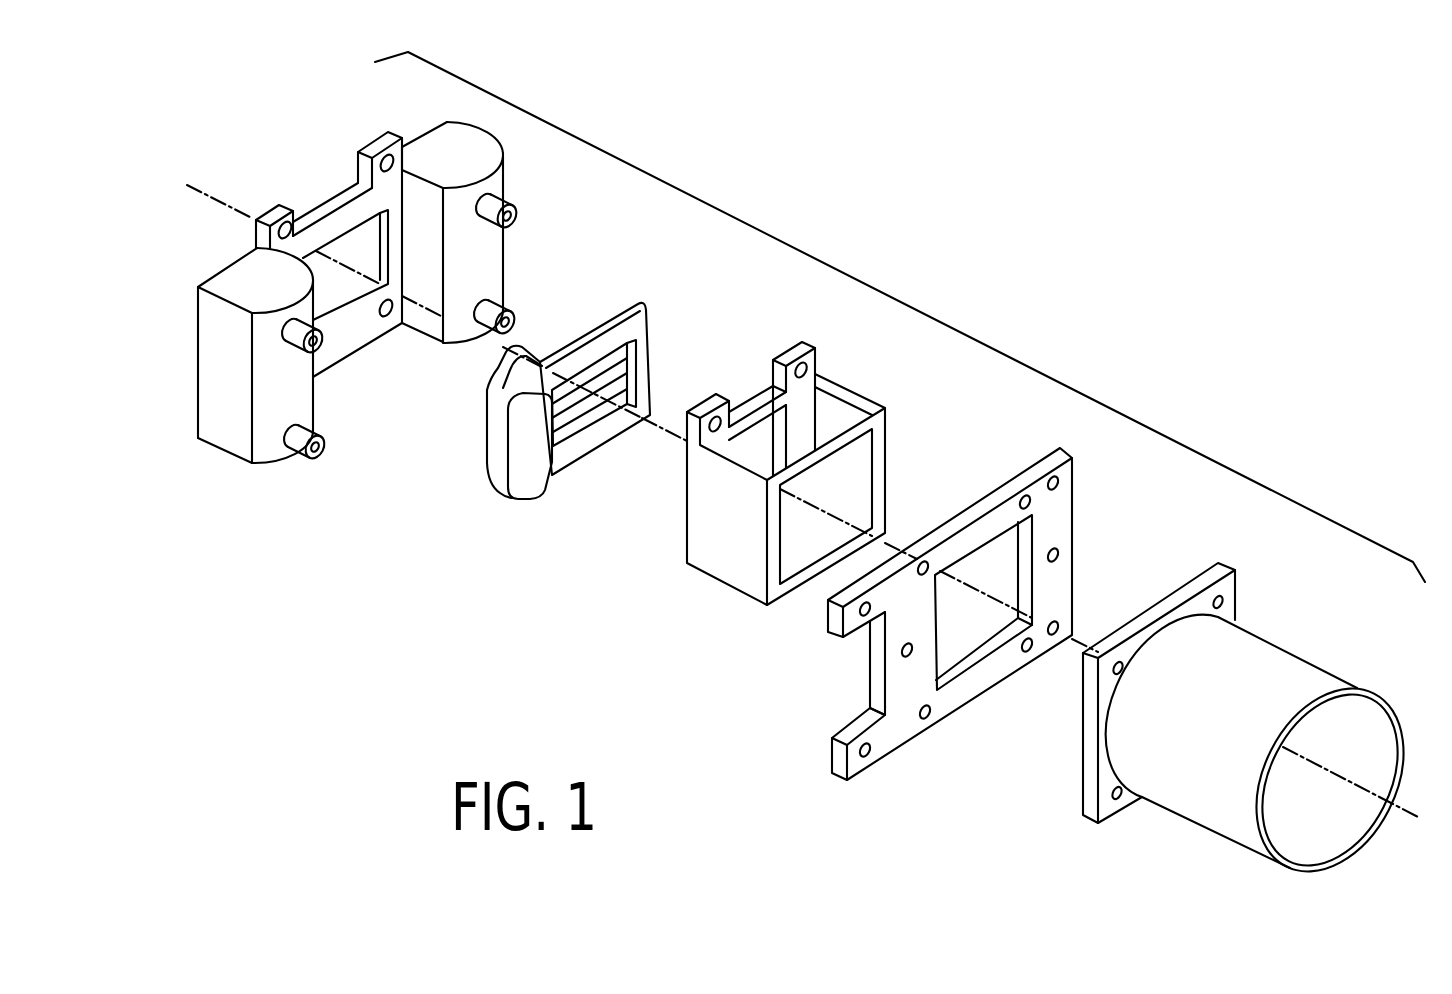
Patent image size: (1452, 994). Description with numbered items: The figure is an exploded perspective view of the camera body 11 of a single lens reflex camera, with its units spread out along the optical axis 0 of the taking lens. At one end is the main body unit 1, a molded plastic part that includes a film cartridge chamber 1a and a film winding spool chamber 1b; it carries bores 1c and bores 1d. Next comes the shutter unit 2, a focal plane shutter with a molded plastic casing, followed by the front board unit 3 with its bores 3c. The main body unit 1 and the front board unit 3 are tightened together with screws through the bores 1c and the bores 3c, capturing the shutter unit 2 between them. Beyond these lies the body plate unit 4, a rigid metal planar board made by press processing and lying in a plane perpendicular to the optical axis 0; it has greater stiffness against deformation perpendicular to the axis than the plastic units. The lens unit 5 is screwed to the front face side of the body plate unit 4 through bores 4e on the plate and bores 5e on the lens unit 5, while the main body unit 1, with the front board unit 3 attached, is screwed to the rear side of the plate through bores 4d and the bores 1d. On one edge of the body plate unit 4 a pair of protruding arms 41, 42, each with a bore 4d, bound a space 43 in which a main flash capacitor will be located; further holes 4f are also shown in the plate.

The optical axis 0 is at (1398, 804).
The main body unit 1 is at (353, 208).
The film cartridge chamber 1a is at (228, 283).
The film winding spool chamber 1b is at (480, 162).
The bores on the main body unit 1c is at (286, 222).
The bores on the main body unit 1d is at (512, 219).
The shutter unit 2 is at (613, 313).
The front board unit 3 is at (752, 395).
The bores on the front board unit 3c is at (713, 416).
The body plate unit 4 is at (938, 589).
The bores in the body plate unit 4d is at (1061, 481).
The bores on the body plate unit 4e is at (1028, 495).
The hole 4f is at (1061, 553).
The lens unit 5 is at (1303, 662).
The bores on the lens unit 5e is at (1225, 602).
The camera body 11 is at (851, 283).
The upper tab 41 is at (826, 624).
The lower tab 42 is at (831, 763).
The space 43 is at (835, 697).